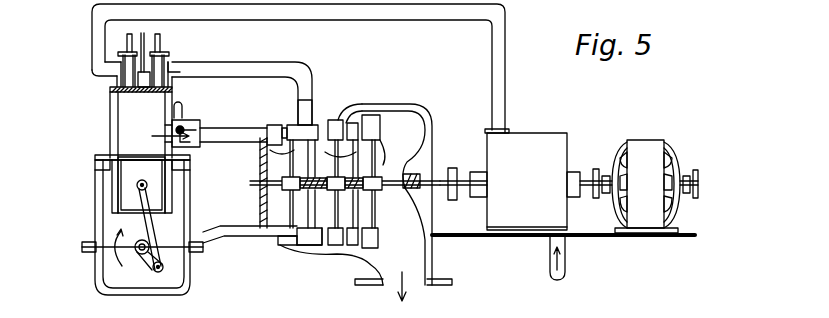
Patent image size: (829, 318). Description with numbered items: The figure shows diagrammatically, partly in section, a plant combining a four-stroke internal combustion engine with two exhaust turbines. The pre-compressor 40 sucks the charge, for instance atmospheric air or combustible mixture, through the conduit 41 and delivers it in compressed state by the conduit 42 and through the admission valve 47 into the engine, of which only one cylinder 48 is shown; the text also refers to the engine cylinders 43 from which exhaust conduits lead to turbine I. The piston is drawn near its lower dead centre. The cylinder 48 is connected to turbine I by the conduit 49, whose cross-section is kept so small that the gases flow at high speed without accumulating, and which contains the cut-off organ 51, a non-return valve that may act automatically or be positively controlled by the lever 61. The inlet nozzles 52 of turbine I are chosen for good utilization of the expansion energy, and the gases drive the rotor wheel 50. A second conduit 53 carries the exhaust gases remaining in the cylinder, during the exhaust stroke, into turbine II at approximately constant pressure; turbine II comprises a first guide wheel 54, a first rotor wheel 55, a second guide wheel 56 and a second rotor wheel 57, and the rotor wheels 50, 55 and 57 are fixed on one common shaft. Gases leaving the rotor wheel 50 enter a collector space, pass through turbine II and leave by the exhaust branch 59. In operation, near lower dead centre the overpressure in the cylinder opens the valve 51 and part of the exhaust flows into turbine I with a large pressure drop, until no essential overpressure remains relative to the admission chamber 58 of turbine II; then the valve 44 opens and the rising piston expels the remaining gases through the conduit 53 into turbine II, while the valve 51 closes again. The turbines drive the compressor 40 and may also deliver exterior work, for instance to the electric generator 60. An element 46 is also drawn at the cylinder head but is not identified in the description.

The pre-compressor 40 is at (526, 181).
The conduit 41 is at (565, 268).
The conduit 42 is at (350, 12).
The cylinder 43 is at (110, 115).
The valve 44 is at (162, 44).
The cylinder head 46 is at (143, 80).
The admission valve 47 is at (125, 44).
The cylinder 48 is at (159, 144).
The conduit 49 is at (214, 144).
The rotor wheel 50 is at (290, 208).
The cut-off organ 51 is at (200, 130).
The inlet nozzles 52 is at (274, 127).
The second conduit 53 is at (283, 57).
The first guide wheel 54 is at (345, 122).
The first rotor wheel 55 is at (335, 215).
The second guide wheel 56 is at (383, 125).
The second rotor wheel 57 is at (373, 162).
The admission chamber 58 is at (313, 118).
The exhaust branch 59 is at (406, 276).
The electric generator 60 is at (655, 186).
The lever 61 is at (182, 110).